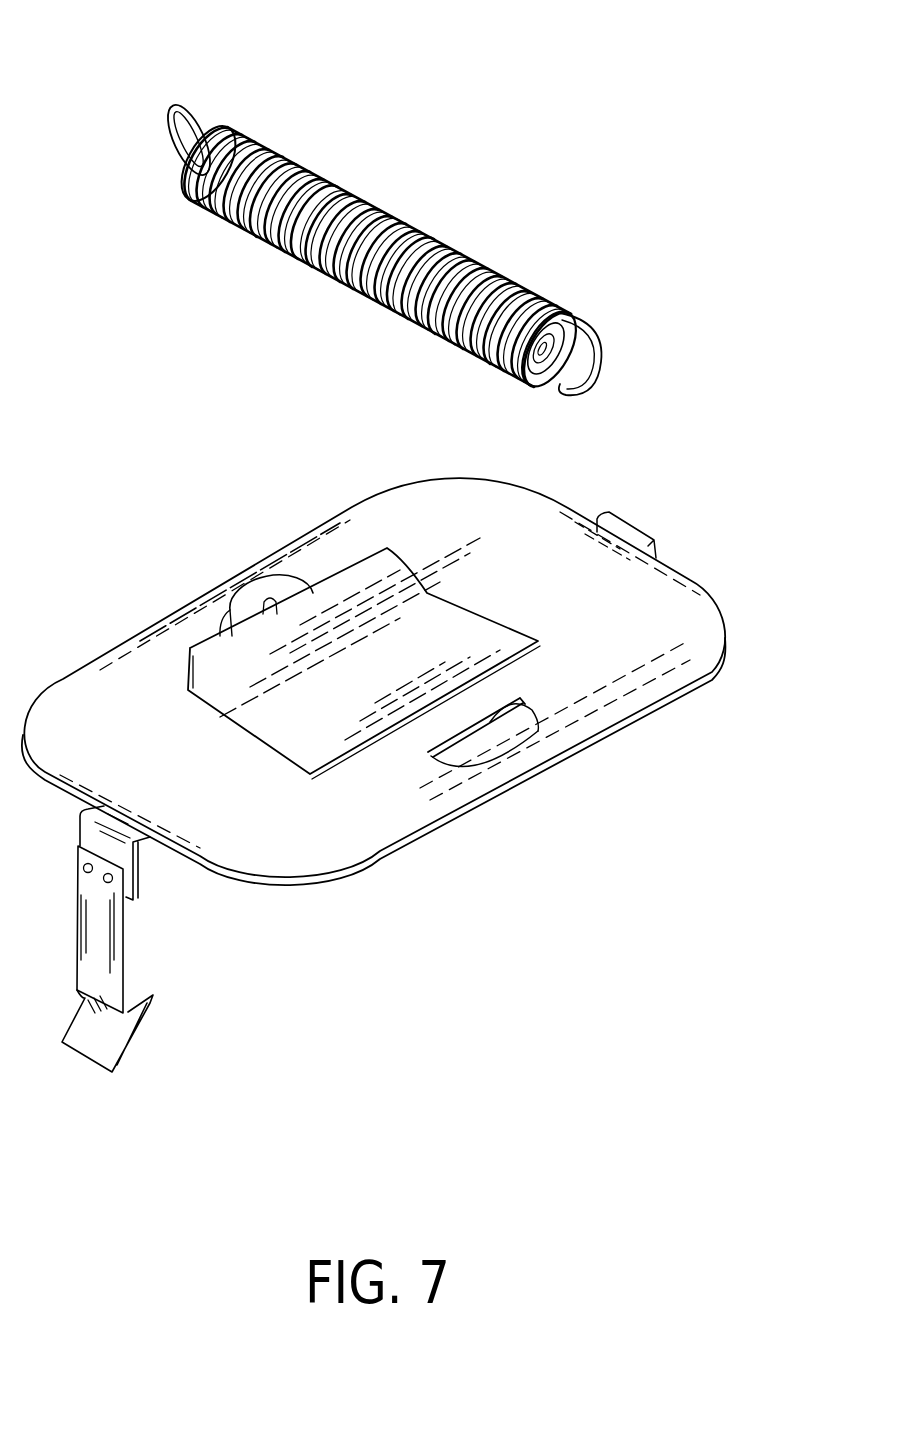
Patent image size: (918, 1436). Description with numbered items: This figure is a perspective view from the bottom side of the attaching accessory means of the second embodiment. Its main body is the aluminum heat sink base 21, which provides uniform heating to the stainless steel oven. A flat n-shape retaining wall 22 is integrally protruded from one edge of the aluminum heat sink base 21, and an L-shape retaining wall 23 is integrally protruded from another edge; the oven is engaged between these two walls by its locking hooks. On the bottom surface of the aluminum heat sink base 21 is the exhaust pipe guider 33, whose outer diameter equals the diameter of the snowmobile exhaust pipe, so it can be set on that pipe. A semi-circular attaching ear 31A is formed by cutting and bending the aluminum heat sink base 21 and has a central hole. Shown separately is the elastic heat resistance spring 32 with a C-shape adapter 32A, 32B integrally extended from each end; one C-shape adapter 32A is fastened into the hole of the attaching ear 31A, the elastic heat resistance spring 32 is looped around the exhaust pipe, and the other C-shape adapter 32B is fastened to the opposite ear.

The aluminum heat sink base 21 is at (250, 830).
The flat n-shape retaining wall 22 is at (627, 523).
The L-shape retaining wall 23 is at (100, 1047).
The attaching ear 31A is at (273, 588).
The elastic heat resistance spring 32 is at (380, 207).
The C-shape adapter 32A is at (198, 110).
The C-shape adapter 32B is at (735, 300).
The exhaust pipe guider 33 is at (363, 682).